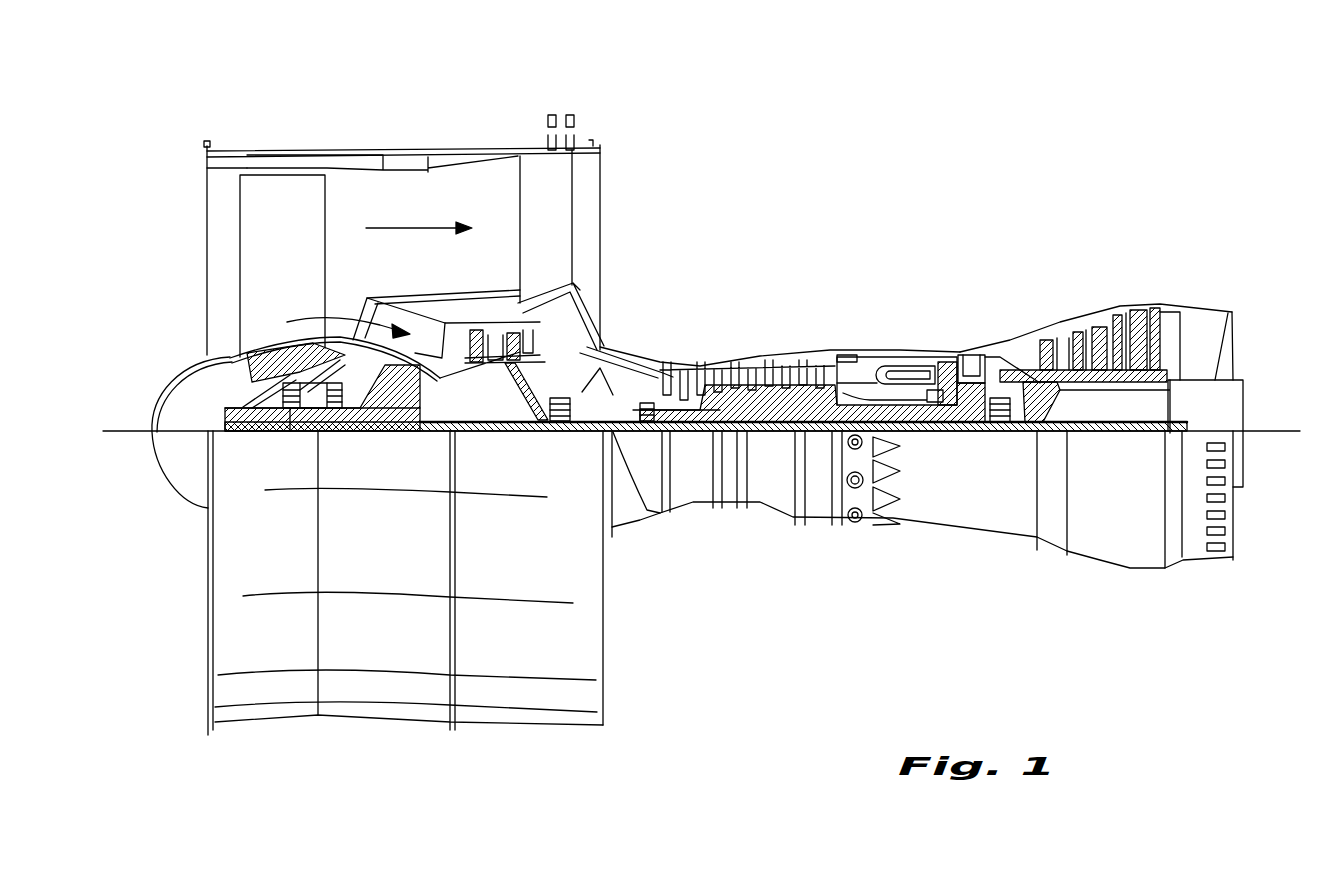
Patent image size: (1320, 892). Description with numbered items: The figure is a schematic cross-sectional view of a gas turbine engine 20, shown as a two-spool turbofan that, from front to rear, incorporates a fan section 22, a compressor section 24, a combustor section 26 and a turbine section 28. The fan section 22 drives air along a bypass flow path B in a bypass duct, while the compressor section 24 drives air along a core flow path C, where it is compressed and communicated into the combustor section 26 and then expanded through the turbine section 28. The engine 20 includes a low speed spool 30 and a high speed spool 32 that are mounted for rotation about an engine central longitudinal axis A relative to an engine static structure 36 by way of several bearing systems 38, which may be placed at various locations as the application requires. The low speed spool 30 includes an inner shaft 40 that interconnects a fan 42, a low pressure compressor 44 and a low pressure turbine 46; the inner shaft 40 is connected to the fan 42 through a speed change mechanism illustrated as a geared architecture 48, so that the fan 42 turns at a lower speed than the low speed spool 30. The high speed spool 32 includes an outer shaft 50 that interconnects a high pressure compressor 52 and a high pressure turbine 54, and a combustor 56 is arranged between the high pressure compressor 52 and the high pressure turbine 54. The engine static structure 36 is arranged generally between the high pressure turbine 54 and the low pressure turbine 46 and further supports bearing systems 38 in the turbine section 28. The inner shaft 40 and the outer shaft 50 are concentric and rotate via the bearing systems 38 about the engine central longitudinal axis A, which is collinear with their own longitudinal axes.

The gas turbine engine 20 is at (915, 190).
The fan section 22 is at (436, 119).
The compressor section 24 is at (450, 265).
The combustor section 26 is at (942, 265).
The turbine section 28 is at (952, 265).
The low speed spool 30 is at (775, 438).
The high speed spool 32 is at (827, 390).
The engine static structure 36 is at (819, 520).
The bearing systems 38 is at (293, 431).
The inner shaft 40 is at (660, 515).
The fan 42 is at (265, 282).
The low pressure compressor 44 is at (531, 333).
The low pressure turbine 46 is at (1105, 323).
The geared architecture 48 is at (415, 412).
The outer shaft 50 is at (903, 410).
The high pressure compressor 52 is at (750, 403).
The high pressure turbine 54 is at (968, 352).
The combustor 56 is at (898, 373).
The engine central longitudinal axis A is at (1279, 431).
The bypass flow path B is at (405, 228).
The core flow path C is at (337, 323).